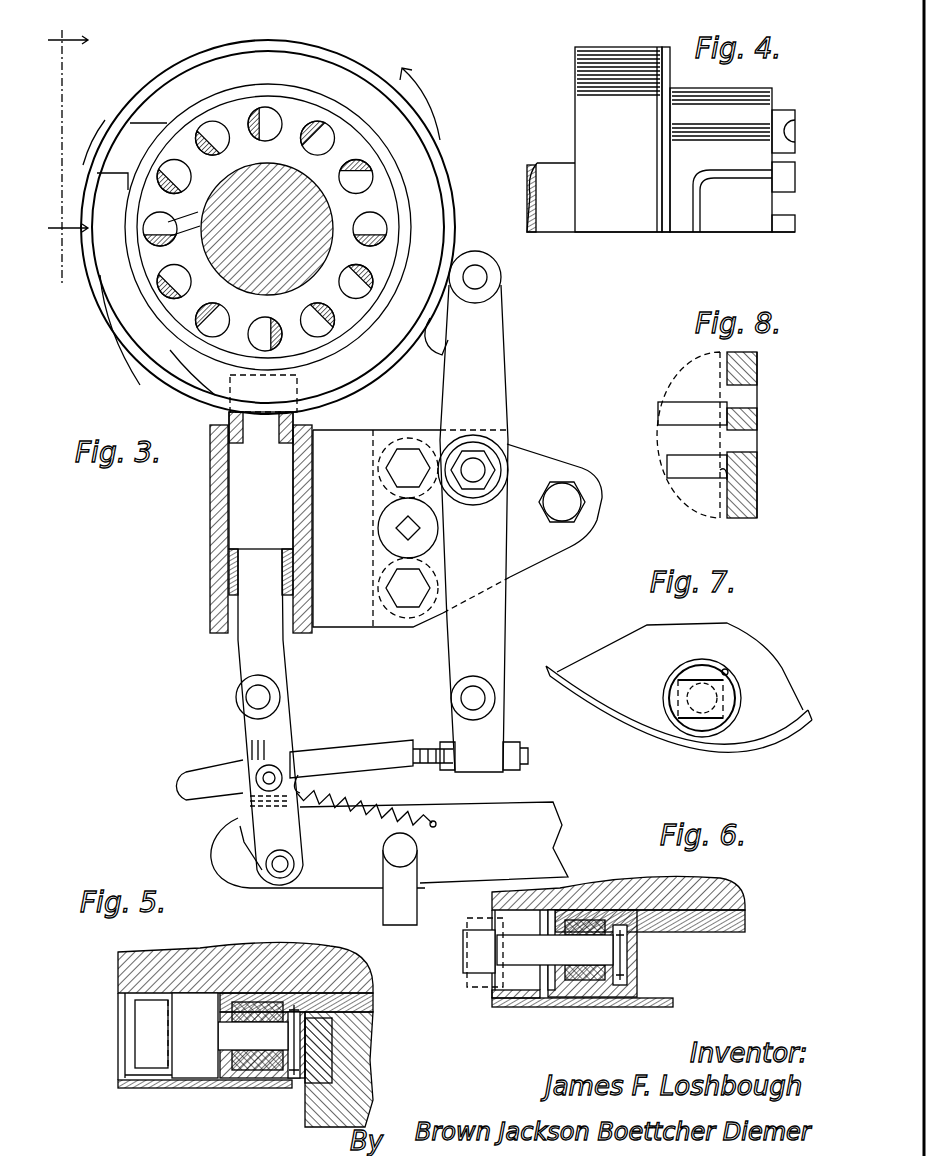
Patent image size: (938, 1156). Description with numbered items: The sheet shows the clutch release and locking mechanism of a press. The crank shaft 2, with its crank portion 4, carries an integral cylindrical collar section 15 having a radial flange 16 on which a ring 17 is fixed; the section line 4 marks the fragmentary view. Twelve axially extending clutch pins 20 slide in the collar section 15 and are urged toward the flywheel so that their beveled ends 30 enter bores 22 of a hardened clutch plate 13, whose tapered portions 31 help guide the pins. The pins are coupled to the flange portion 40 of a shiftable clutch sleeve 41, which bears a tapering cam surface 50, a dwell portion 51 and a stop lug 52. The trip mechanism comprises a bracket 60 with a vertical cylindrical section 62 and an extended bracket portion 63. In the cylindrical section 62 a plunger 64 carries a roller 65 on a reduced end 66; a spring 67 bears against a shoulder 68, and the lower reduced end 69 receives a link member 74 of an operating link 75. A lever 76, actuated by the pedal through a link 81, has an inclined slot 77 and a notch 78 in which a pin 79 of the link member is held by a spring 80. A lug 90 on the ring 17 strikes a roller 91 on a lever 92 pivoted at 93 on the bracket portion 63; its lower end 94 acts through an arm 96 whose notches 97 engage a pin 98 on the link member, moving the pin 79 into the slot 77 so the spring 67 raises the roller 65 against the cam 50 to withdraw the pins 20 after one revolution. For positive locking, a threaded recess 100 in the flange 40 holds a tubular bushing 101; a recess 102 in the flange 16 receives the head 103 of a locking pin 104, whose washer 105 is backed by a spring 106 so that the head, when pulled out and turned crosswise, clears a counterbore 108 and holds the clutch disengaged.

In FIG. 3, the crank shaft 2 is at (290, 180).
In FIG. 4, the crank shaft 2 is at (549, 152).
In FIG. 7, the crank shaft 2 is at (638, 626).
In FIG. 5, the crank shaft 2 is at (108, 962).
In FIG. 3, the crank portion 4 is at (62, 147).
In FIG. 8, the clutch plate 13 is at (760, 502).
In FIG. 3, the collar section 15 is at (340, 145).
In FIG. 7, the collar section 15 is at (628, 718).
In FIG. 6, the collar section 15 is at (638, 890).
In FIG. 5, the collar section 15 is at (120, 985).
In FIG. 5, the flange 16 is at (118, 1082).
In FIG. 3, the ring 17 is at (298, 46).
In FIG. 4, the ring 17 is at (620, 234).
In FIG. 7, the ring 17 is at (780, 730).
In FIG. 6, the ring 17 is at (585, 998).
In FIG. 5, the ring 17 is at (262, 1045).
In FIG. 3, the clutch pins 20 is at (260, 125).
In FIG. 4, the clutch pins 20 is at (790, 112).
In FIG. 8, the clutch pins 20 is at (670, 412).
In FIG. 8, the bores 22 is at (760, 385).
In FIG. 3, the beveled ends 30 is at (175, 300).
In FIG. 4, the beveled ends 30 is at (795, 135).
In FIG. 8, the beveled ends 30 is at (720, 492).
In FIG. 8, the tapered portions 31 is at (758, 440).
In FIG. 3, the flange portion 40 is at (160, 372).
In FIG. 4, the flange portion 40 is at (668, 60).
In FIG. 6, the flange portion 40 is at (625, 1007).
In FIG. 5, the flange portion 40 is at (290, 1078).
In FIG. 3, the clutch sleeve 41 is at (205, 382).
In FIG. 4, the clutch sleeve 41 is at (760, 98).
In FIG. 6, the clutch sleeve 41 is at (740, 910).
In FIG. 5, the clutch sleeve 41 is at (373, 1003).
In FIG. 3, the cam surface 50 is at (180, 325).
In FIG. 3, the dwell portion 51 is at (95, 178).
In FIG. 4, the dwell portion 51 is at (698, 208).
In FIG. 3, the stop lug 52 is at (128, 125).
In FIG. 4, the stop lug 52 is at (740, 182).
In FIG. 3, the bracket 60 is at (352, 630).
In FIG. 3, the cylindrical section 62 is at (208, 522).
In FIG. 3, the bracket portion 63 is at (535, 555).
In FIG. 3, the plunger 64 is at (255, 490).
In FIG. 5, the plunger 64 is at (355, 1090).
In FIG. 3, the roller 65 is at (298, 385).
In FIG. 5, the roller 65 is at (320, 1050).
In FIG. 3, the reduced end 66 is at (262, 420).
In FIG. 3, the spring 67 is at (208, 578).
In FIG. 3, the shoulder 68 is at (262, 562).
In FIG. 3, the reduced end 69 is at (236, 662).
In FIG. 3, the link member 74 is at (285, 760).
In FIG. 3, the operating link 75 is at (218, 756).
In FIG. 3, the lever 76 is at (508, 820).
In FIG. 3, the inclined slot 77 is at (238, 830).
In FIG. 3, the notch 78 is at (298, 860).
In FIG. 3, the pin 79 is at (298, 880).
In FIG. 3, the spring 80 is at (375, 798).
In FIG. 3, the link 81 is at (410, 900).
In FIG. 3, the lug 90 is at (445, 336).
In FIG. 3, the roller 91 is at (495, 262).
In FIG. 3, the lever 92 is at (508, 385).
In FIG. 3, the pivot 93 is at (525, 430).
In FIG. 3, the lower end 94 is at (495, 662).
In FIG. 3, the arm 96 is at (372, 752).
In FIG. 3, the notches 97 is at (300, 778).
In FIG. 3, the pin 98 is at (245, 790).
In FIG. 5, the threaded recess 100 is at (268, 1025).
In FIG. 5, the tubular bushing 101 is at (218, 1088).
In FIG. 5, the recess 102 is at (135, 1046).
In FIG. 7, the head 103 is at (690, 720).
In FIG. 6, the head 103 is at (480, 970).
In FIG. 5, the head 103 is at (155, 1065).
In FIG. 6, the locking pin 104 is at (535, 968).
In FIG. 5, the locking pin 104 is at (192, 1030).
In FIG. 5, the washer 105 is at (350, 952).
In FIG. 5, the spring 106 is at (252, 1072).
In FIG. 7, the counterbore 108 is at (728, 670).